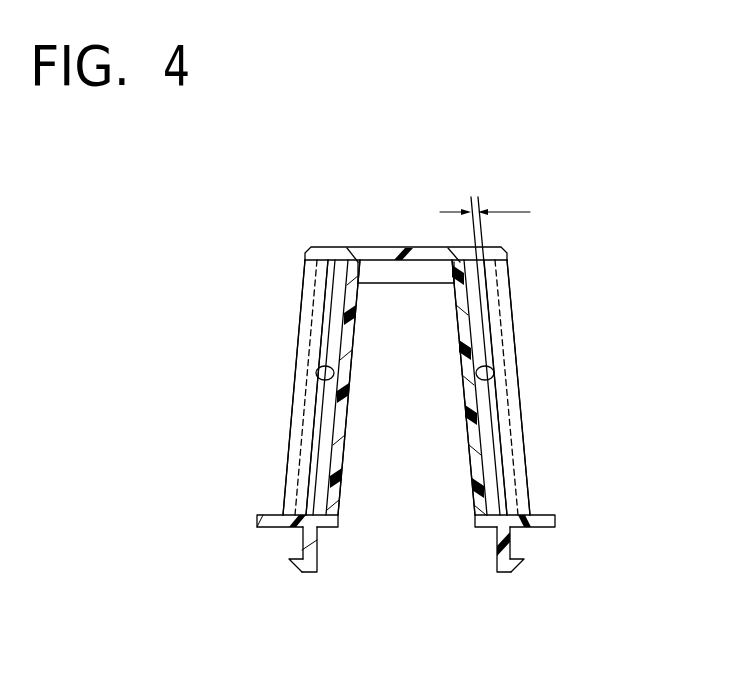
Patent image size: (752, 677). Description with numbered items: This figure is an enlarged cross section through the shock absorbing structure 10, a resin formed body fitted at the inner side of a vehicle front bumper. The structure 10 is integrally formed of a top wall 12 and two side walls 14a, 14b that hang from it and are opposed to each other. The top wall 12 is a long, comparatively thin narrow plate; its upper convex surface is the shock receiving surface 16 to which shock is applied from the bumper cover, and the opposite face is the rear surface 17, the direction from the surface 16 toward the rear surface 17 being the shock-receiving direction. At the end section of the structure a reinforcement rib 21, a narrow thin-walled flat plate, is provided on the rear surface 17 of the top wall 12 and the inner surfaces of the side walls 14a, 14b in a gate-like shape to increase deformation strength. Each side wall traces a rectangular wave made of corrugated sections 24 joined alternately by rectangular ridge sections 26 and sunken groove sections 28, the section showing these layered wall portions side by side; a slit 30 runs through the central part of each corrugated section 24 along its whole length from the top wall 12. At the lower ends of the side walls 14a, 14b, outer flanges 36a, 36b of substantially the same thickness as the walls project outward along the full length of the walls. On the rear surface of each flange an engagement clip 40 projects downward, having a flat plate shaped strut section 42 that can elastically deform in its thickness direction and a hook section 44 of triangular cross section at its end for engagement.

The shock absorbing structure 10 is at (558, 267).
The top wall 12 is at (332, 236).
The side wall 14a is at (319, 431).
The side wall 14b is at (493, 431).
The shock receiving surface 16 is at (398, 246).
The rear surface 17 is at (381, 263).
The reinforcement rib 21 is at (425, 273).
The corrugated section 24 is at (317, 323).
The ridge section 26 is at (298, 352).
The groove section 28 is at (332, 468).
The slit 30 is at (318, 377).
The outer flange 36a is at (267, 513).
The outer flange 36b is at (547, 513).
The engagement clip 40 is at (310, 586).
The strut section 42 is at (303, 542).
The hook section 44 is at (297, 563).